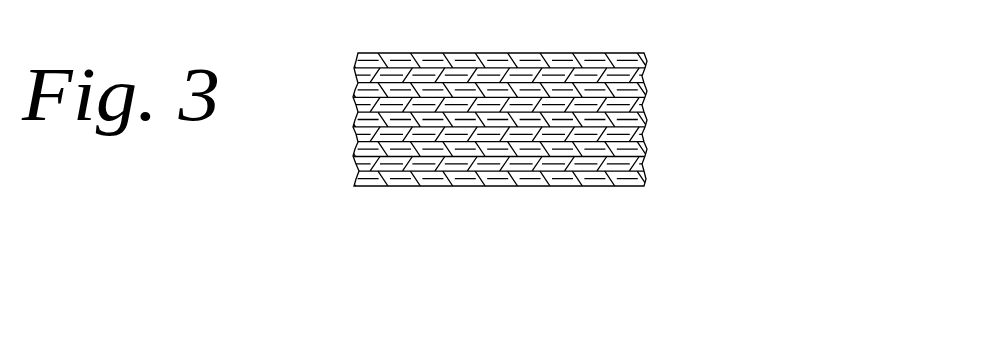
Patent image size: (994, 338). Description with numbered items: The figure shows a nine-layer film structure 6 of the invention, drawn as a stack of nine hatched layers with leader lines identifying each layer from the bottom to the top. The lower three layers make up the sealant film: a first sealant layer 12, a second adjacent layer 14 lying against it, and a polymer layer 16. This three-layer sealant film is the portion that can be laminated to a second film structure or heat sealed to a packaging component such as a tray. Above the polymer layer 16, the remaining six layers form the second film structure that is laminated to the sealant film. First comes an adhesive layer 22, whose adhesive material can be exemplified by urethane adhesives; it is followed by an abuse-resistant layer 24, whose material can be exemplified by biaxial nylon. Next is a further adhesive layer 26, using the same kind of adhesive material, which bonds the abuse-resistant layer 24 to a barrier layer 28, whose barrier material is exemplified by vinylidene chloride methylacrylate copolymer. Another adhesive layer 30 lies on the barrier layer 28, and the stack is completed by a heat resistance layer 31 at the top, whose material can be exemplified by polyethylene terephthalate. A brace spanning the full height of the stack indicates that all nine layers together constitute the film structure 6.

The nine-layer film structure 6 is at (633, 136).
The first sealant layer 12 is at (553, 209).
The second adjacent layer 14 is at (549, 190).
The polymer layer 16 is at (550, 169).
The adhesive layer 22 is at (549, 148).
The abuse-resistant layer 24 is at (549, 127).
The adhesive layer 26 is at (548, 105).
The barrier layer 28 is at (549, 82).
The adhesive layer 30 is at (548, 63).
The heat resistance layer 31 is at (549, 42).